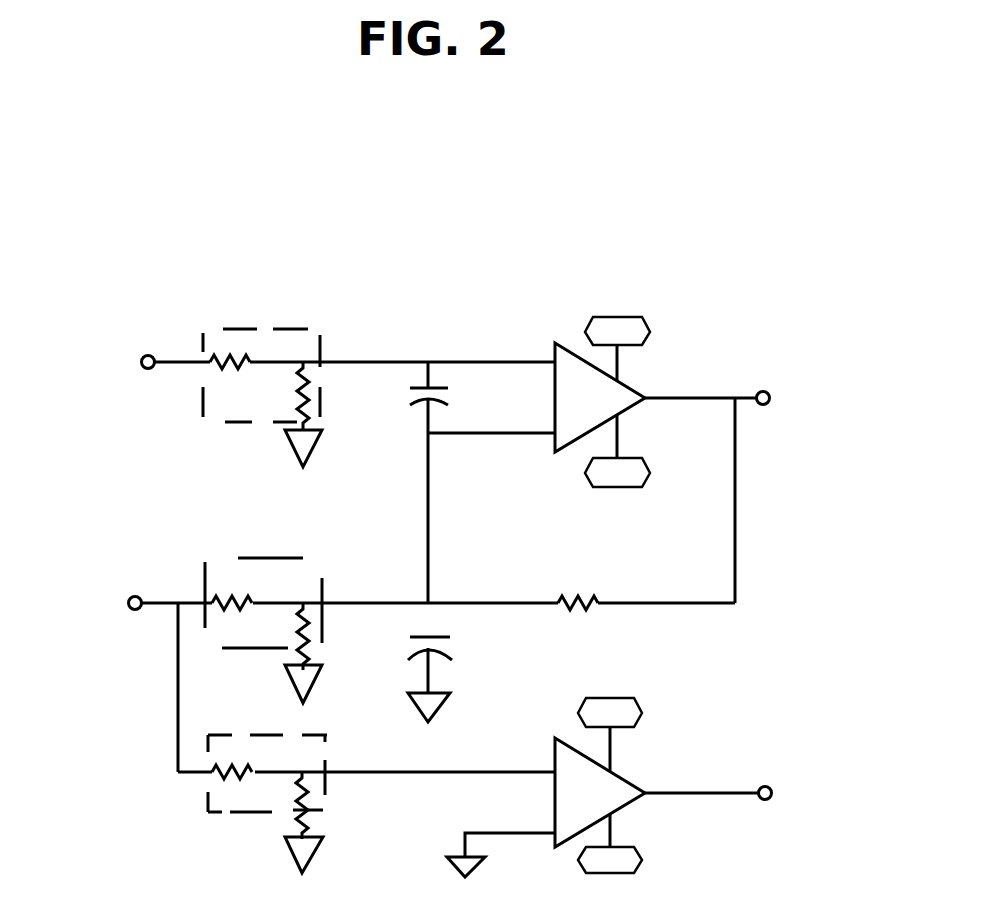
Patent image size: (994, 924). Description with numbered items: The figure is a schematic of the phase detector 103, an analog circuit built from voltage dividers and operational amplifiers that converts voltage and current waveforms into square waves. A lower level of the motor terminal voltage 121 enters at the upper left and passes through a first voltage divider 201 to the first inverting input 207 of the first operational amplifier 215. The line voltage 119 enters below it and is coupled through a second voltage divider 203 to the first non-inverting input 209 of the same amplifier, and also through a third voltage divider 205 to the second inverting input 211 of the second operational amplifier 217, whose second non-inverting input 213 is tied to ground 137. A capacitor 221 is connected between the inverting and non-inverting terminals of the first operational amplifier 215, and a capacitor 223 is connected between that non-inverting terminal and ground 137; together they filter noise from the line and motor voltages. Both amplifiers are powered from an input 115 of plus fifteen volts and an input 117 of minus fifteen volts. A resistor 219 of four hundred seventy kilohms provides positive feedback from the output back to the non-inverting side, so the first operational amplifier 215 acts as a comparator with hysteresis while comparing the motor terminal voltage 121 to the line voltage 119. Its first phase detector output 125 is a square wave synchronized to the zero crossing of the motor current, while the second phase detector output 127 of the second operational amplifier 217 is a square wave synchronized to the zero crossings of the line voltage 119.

The phase detector 103 is at (508, 255).
The input 115 is at (617, 358).
The input 117 is at (617, 435).
The line voltage 119 is at (132, 612).
The motor terminal voltage 121 is at (147, 377).
The first phase detector output 125 is at (770, 394).
The second phase detector output 127 is at (772, 790).
The ground 137 is at (307, 443).
The first voltage divider 201 is at (225, 422).
The second voltage divider 203 is at (239, 652).
The second line voltage divider 205 is at (230, 813).
The first inverting input 207 is at (520, 340).
The first non-inverting input 209 is at (554, 442).
The second inverting input 211 is at (463, 767).
The non-inverting input line of amplifier 217 213 is at (555, 843).
The first operational amplifier 215 is at (596, 409).
The second operational amplifier 217 is at (598, 806).
The resistor 219 is at (570, 595).
The capacitor 221 is at (415, 398).
The capacitor 223 is at (411, 640).